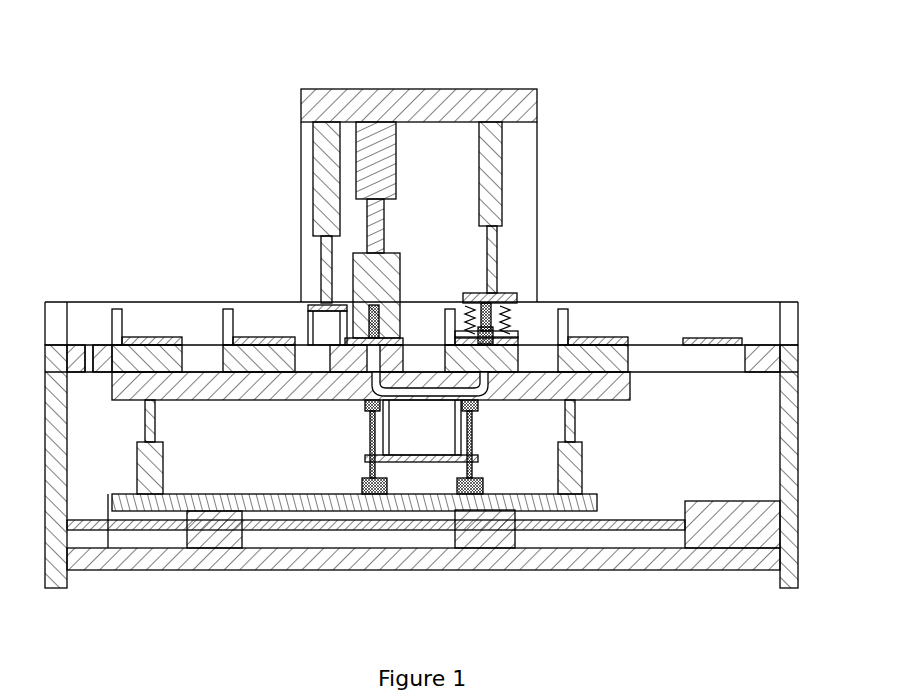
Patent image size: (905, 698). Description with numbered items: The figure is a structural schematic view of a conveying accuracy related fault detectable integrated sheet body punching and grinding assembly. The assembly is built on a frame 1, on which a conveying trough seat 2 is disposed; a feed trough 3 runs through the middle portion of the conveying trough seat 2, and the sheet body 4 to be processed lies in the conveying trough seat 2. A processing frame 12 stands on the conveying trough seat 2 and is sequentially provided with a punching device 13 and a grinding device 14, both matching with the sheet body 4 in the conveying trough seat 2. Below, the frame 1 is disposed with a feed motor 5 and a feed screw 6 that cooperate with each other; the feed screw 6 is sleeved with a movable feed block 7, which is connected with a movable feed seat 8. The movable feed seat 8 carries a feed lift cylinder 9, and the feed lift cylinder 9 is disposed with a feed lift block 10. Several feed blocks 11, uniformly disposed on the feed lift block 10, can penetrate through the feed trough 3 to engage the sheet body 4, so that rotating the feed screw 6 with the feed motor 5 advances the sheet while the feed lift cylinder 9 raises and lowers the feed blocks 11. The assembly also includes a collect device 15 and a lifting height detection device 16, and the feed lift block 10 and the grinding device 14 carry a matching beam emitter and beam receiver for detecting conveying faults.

The frame 1 is at (612, 552).
The conveying trough seat 2 is at (77, 350).
The feed trough 3 is at (645, 350).
The sheet body 4 is at (728, 340).
The feed motor 5 is at (720, 522).
The feed screw 6 is at (545, 523).
The movable feed block 7 is at (237, 525).
The movable feed seat 8 is at (455, 511).
The feed lift cylinder 9 is at (118, 512).
The feed lift block 10 is at (152, 312).
The feed block 11 is at (220, 312).
The processing frame 12 is at (366, 104).
The punching device 13 is at (372, 268).
The grinding device 14 is at (503, 293).
The collect device 15 is at (408, 460).
The lifting height detection device 16 is at (307, 303).